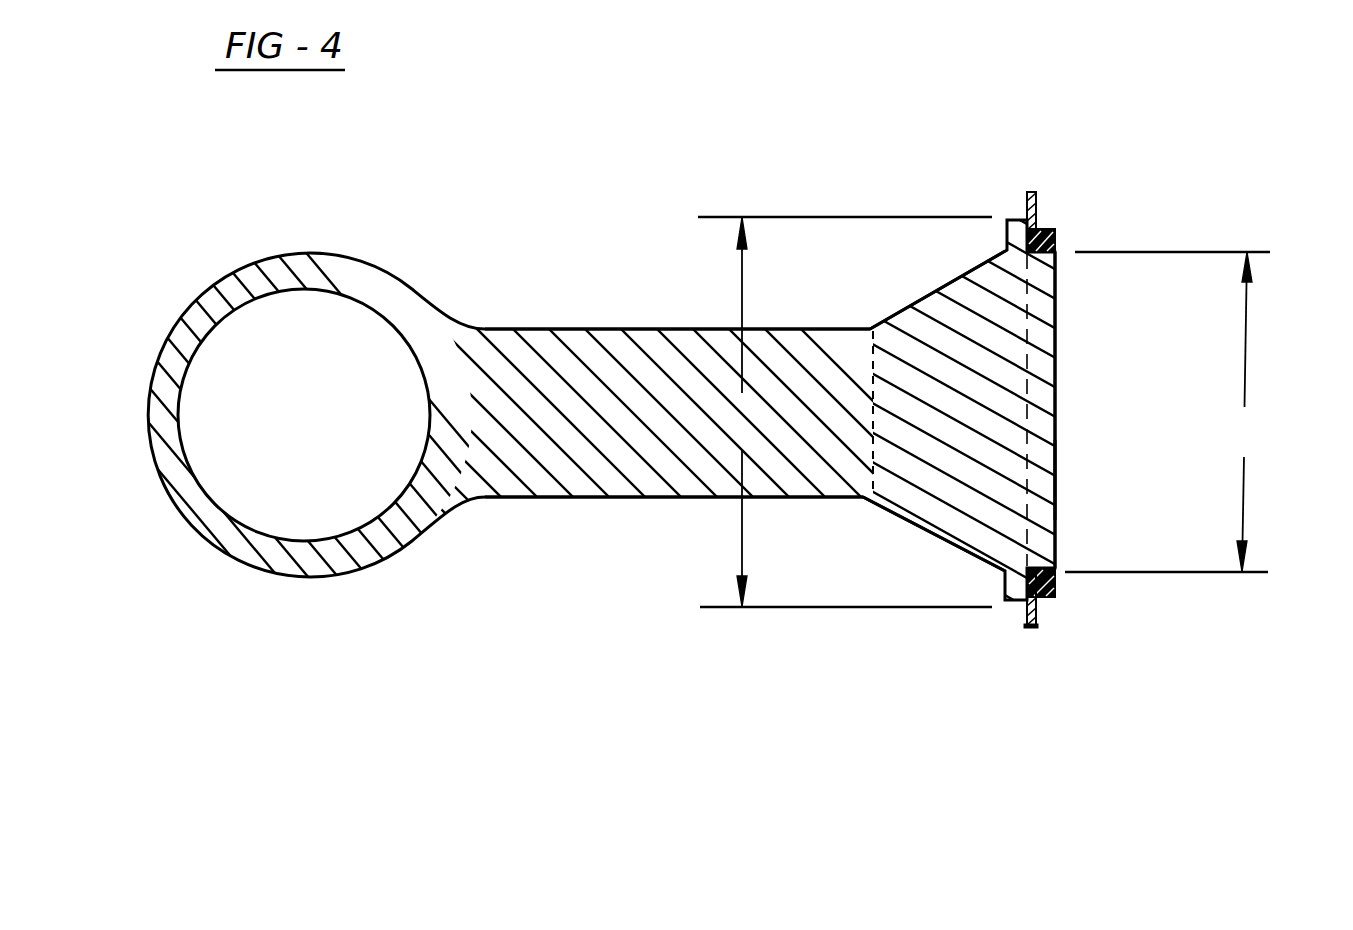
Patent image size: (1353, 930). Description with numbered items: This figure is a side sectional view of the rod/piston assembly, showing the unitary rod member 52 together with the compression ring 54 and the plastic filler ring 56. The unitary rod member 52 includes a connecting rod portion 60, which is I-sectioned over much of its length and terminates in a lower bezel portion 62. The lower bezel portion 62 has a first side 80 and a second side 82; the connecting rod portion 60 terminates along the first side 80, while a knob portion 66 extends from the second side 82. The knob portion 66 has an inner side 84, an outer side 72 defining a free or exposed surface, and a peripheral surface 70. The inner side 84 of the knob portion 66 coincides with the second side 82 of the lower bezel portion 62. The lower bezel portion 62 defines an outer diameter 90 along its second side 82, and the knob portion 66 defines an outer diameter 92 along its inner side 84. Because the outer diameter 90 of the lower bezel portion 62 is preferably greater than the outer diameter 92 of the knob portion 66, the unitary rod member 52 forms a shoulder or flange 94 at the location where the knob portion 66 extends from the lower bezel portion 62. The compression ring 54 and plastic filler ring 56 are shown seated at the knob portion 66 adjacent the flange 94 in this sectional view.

The unitary rod member 52 is at (540, 326).
The compression ring 54 is at (1037, 628).
The plastic filler ring 56 is at (1055, 243).
The connecting rod portion 60 is at (573, 487).
The lower bezel portion 62 is at (945, 523).
The knob portion 66 is at (1053, 403).
The peripheral surface 70 is at (1055, 567).
The outer side 72 is at (1053, 475).
The first side 80 is at (877, 407).
The second side 82 is at (1033, 338).
The inner side 84 is at (1023, 368).
The outer diameter 90 is at (845, 412).
The outer diameter 92 is at (1167, 412).
The flange 94 is at (1037, 218).